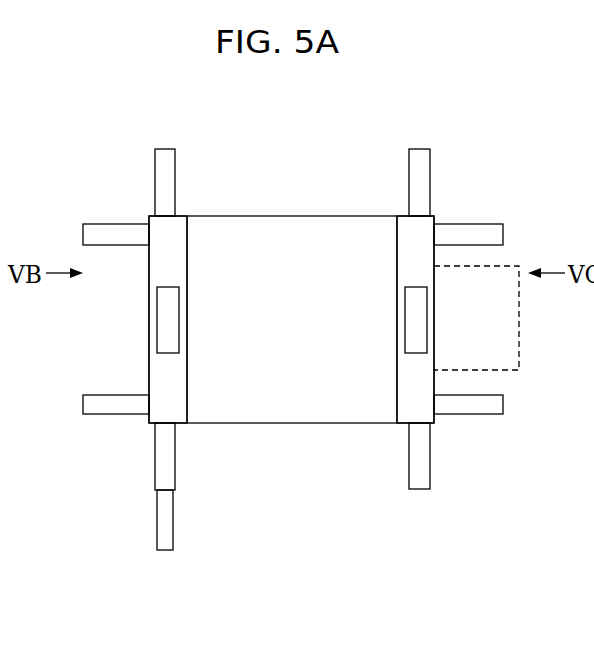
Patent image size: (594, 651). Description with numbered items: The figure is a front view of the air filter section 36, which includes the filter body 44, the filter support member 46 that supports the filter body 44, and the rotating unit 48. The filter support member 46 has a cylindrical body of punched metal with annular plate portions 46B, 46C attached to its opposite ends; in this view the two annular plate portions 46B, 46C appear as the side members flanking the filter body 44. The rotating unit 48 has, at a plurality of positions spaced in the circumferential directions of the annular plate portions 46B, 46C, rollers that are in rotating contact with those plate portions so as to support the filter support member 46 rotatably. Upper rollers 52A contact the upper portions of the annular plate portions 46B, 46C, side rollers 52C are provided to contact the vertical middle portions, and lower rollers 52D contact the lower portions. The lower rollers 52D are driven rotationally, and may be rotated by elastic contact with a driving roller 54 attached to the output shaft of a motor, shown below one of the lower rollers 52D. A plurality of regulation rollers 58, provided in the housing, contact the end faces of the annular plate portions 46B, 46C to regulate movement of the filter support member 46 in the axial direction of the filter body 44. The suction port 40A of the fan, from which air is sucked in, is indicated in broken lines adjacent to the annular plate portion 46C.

The air filter section 36 is at (411, 119).
The filter body 44 is at (289, 224).
The filter support member 46 is at (268, 290).
The annular plate portion 46B is at (163, 222).
The annular plate portion 46C is at (418, 222).
The rotating unit 48 is at (262, 490).
The upper rollers 52A is at (170, 173).
The side rollers 52C is at (170, 321).
The lower rollers 52D is at (170, 470).
The driving roller 54 is at (168, 535).
The regulation rollers 58 is at (93, 228).
The suction port 40A is at (519, 345).